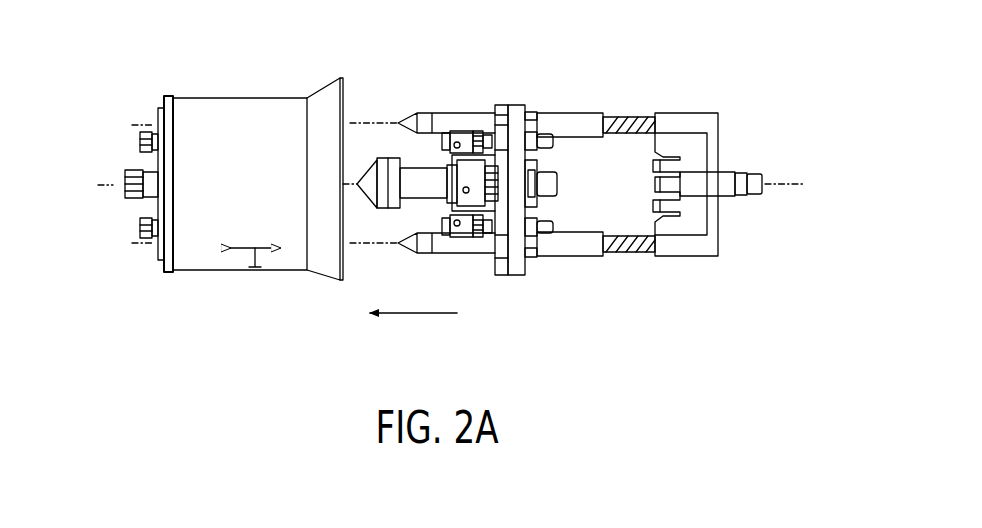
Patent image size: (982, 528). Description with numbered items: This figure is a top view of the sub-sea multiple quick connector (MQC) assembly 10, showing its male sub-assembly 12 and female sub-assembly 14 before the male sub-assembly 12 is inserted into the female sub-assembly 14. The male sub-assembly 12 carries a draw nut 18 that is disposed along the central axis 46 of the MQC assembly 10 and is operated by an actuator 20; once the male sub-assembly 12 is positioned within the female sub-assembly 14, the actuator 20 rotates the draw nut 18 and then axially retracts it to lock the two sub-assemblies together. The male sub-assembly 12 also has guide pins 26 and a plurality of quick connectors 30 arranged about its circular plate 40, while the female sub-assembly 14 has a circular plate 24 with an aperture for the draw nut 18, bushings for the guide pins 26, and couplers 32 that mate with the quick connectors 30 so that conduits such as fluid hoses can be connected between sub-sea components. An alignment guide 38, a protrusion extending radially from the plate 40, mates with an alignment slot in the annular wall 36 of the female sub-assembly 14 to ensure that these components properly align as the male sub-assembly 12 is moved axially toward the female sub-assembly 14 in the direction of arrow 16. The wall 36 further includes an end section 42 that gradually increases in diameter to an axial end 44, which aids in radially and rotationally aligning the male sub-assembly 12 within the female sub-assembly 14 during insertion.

The MQC assembly 10 is at (705, 300).
The male sub-assembly 12 is at (582, 280).
The female sub-assembly 14 is at (210, 297).
The arrow 16 is at (417, 313).
The draw nut 18 is at (376, 162).
The actuator 20 is at (462, 200).
The circular plate 24 is at (163, 270).
The guide pins 26 is at (450, 117).
The quick connectors 30 is at (462, 133).
The couplers 32 is at (140, 141).
The annular wall 36 is at (240, 97).
The alignment guide 38 is at (510, 270).
The circular plate 40 is at (518, 112).
The end section 42 is at (326, 262).
The axial end 44 is at (352, 65).
The central axis 46 is at (766, 184).